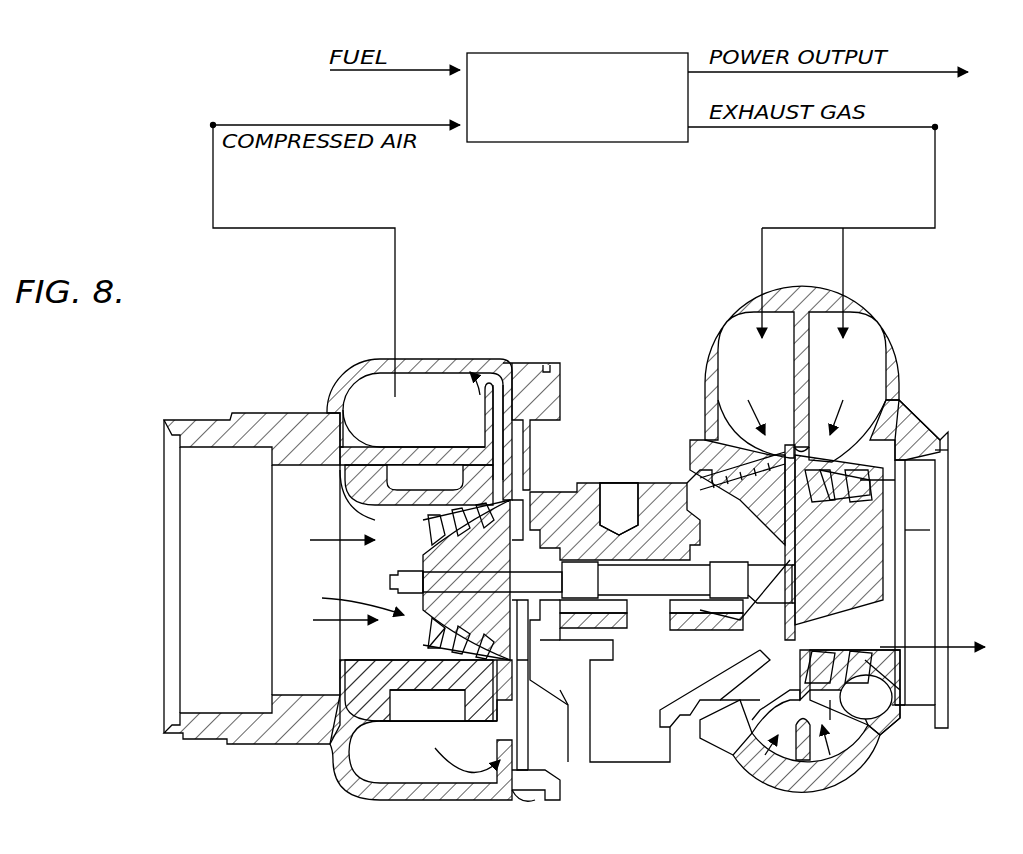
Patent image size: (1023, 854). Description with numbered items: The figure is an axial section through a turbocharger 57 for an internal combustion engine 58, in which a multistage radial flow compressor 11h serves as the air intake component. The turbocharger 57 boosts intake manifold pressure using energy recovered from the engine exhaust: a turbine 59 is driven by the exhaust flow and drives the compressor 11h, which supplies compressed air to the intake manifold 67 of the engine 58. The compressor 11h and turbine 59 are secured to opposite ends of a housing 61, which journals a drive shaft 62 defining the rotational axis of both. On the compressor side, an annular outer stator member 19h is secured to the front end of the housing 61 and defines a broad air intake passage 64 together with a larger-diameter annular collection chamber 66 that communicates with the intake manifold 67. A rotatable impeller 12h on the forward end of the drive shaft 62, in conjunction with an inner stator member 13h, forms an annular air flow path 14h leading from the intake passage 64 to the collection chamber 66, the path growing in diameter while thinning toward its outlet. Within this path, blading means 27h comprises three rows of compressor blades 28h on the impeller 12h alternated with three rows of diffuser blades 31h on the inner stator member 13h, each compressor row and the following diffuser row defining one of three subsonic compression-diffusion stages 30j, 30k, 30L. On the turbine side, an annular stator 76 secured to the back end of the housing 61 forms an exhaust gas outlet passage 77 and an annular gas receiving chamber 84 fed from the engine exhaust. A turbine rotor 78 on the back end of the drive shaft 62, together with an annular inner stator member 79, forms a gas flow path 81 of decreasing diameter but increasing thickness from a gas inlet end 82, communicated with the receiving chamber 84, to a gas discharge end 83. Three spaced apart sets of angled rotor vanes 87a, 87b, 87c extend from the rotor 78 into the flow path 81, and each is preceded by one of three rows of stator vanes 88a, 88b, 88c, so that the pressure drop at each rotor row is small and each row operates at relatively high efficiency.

The internal combustion engine 58 is at (575, 142).
The intake manifold 67 is at (214, 123).
The collection chamber 66 is at (936, 126).
The air intake passage 64 is at (182, 462).
The air flow path 14h is at (345, 512).
The blading means 27h is at (342, 599).
The outer stator member 19h is at (488, 365).
The diffuser blades 31h is at (445, 520).
The inner stator member 13h is at (375, 470).
The compression-diffusion stage 30j is at (420, 722).
The compression-diffusion stage 30k is at (445, 731).
The compression-diffusion stage 30L is at (520, 700).
The compressor 11h is at (530, 805).
The impeller 12h is at (510, 618).
The compressor blades 28h is at (425, 640).
The turbocharger 57 is at (638, 767).
The housing 61 is at (592, 483).
The drive shaft 62 is at (662, 590).
The turbine 59 is at (858, 772).
The turbine rotor 78 is at (862, 590).
The inner stator member 79 is at (880, 490).
The gas flow path 81 is at (876, 520).
The gas inlet end 82 is at (785, 440).
The row of stator vanes 88a is at (818, 445).
The row of stator vanes 88b is at (860, 475).
The row of stator vanes 88c is at (865, 490).
The exhaust gas outlet passage 77 is at (948, 466).
The gas discharge end 83 is at (890, 532).
The set of rotor vanes 87c is at (870, 675).
The set of rotor vanes 87b is at (895, 715).
The set of rotor vanes 87a is at (835, 712).
The gas receiving chamber 84 is at (818, 768).
The annular stator 76 is at (745, 770).